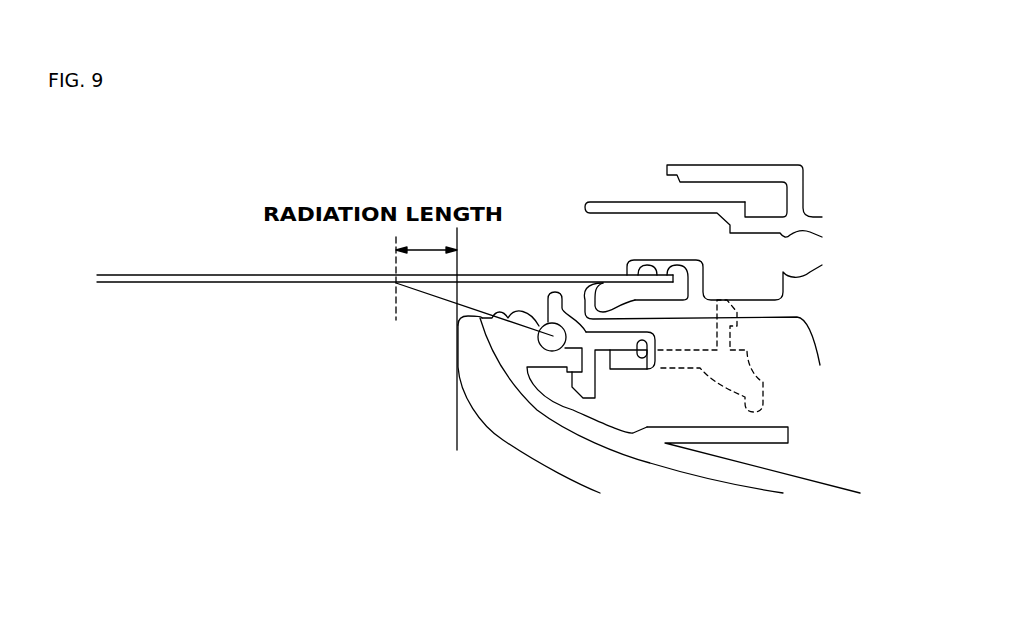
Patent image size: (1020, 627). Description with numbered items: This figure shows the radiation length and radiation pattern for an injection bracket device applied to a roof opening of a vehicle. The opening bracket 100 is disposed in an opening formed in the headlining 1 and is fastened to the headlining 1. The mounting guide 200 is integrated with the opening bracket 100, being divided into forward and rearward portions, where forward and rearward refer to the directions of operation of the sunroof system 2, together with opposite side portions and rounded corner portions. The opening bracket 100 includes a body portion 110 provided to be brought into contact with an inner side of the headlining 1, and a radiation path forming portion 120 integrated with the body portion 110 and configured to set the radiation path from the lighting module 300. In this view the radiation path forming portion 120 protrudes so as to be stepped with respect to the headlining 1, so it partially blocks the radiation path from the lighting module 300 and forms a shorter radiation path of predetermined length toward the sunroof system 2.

The headlining 1 is at (585, 467).
The sunroof system 2 is at (820, 204).
The opening bracket 100 is at (552, 451).
The body portion 110 is at (568, 420).
The radiation path forming portion 120 is at (482, 318).
The mounting guide 200 is at (622, 337).
The lighting module 300 is at (556, 335).